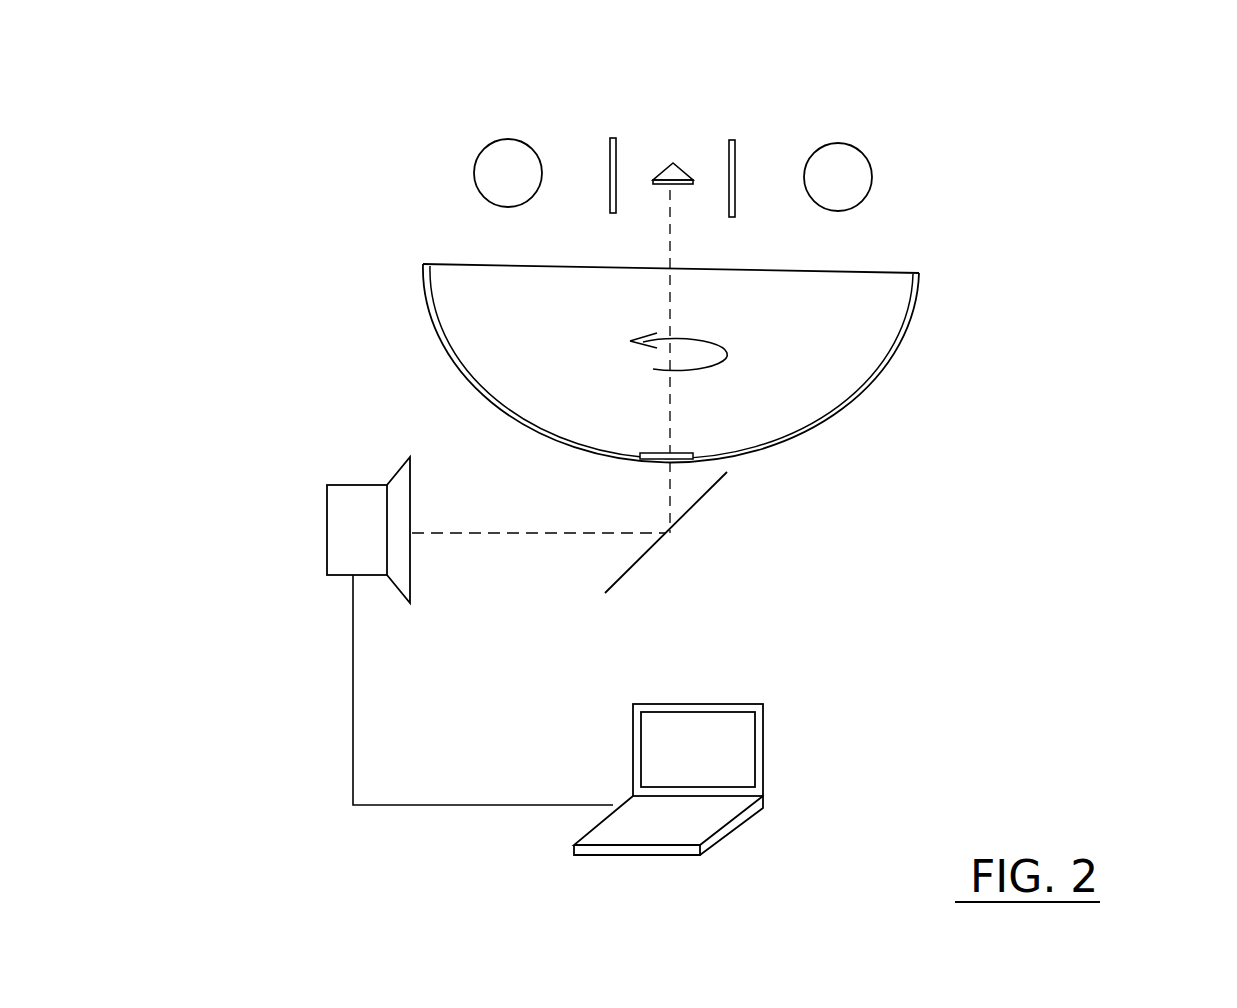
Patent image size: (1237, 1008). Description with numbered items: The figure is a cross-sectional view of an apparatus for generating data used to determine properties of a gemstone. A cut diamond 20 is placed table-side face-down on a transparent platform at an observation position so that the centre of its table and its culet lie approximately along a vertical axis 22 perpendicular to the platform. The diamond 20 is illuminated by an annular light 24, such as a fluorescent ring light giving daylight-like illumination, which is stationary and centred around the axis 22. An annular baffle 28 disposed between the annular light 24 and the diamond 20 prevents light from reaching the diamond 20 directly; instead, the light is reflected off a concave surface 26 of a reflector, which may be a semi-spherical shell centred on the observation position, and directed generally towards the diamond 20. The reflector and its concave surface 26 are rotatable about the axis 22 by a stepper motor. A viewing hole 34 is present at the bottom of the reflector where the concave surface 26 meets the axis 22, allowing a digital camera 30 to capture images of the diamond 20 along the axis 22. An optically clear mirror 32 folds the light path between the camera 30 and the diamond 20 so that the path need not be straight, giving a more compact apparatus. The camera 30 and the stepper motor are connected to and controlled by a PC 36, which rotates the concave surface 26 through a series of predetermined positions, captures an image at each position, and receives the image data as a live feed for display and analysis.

The diamond 20 is at (530, 110).
The axis 22 is at (668, 243).
The annular light 24 is at (982, 151).
The concave surface 26 is at (784, 363).
The annular baffle 28 is at (943, 195).
The camera 30 is at (440, 589).
The mirror 32 is at (766, 558).
The viewing hole 34 is at (907, 518).
The PC 36 is at (766, 753).